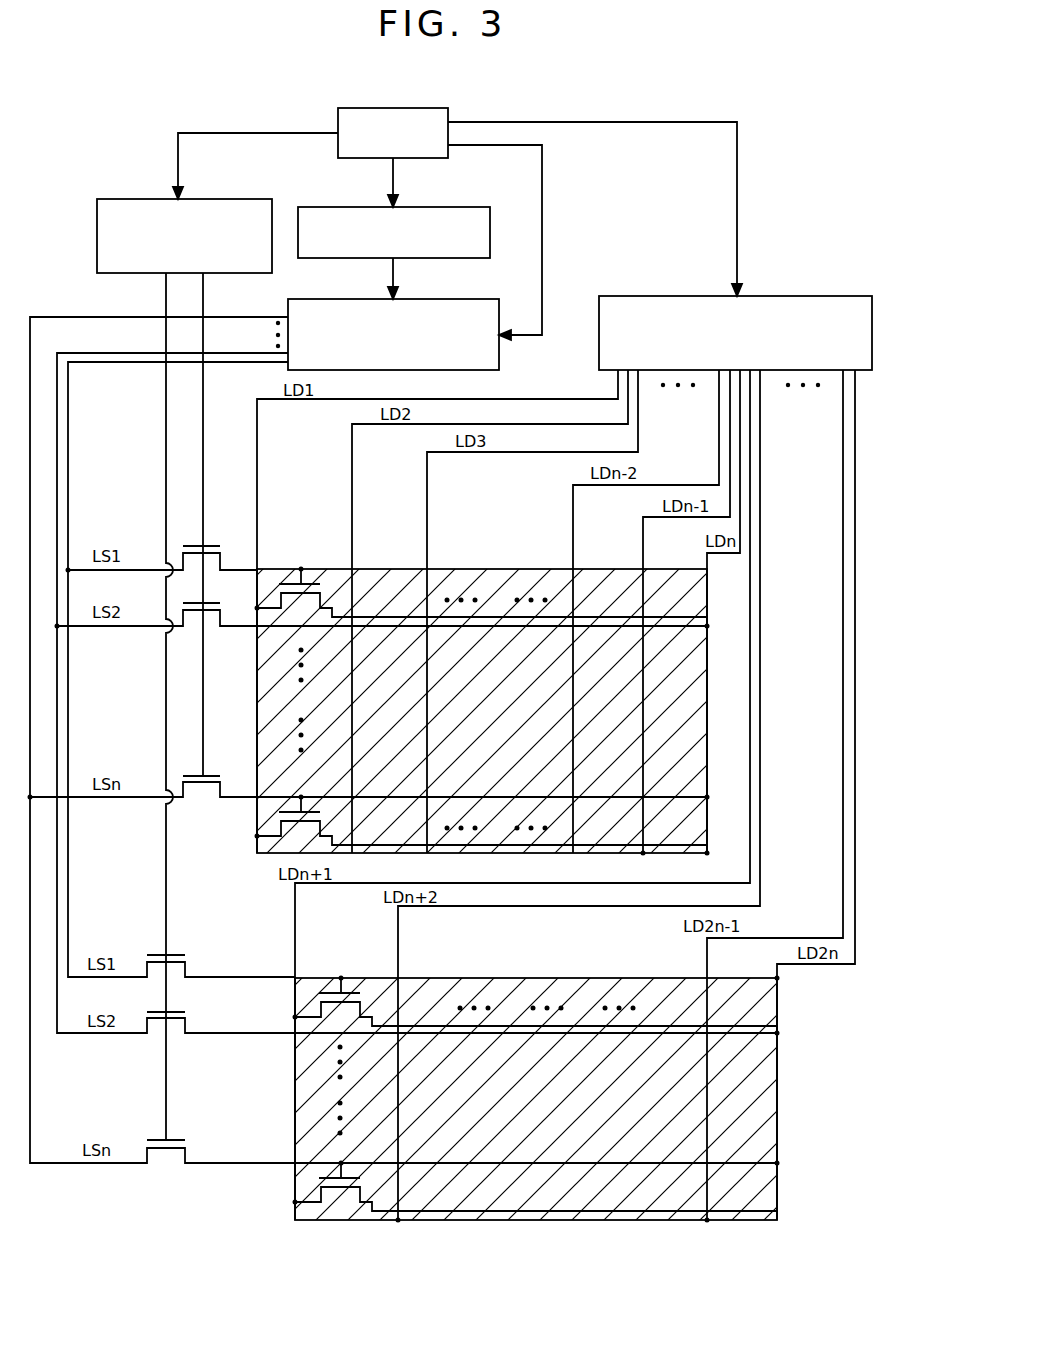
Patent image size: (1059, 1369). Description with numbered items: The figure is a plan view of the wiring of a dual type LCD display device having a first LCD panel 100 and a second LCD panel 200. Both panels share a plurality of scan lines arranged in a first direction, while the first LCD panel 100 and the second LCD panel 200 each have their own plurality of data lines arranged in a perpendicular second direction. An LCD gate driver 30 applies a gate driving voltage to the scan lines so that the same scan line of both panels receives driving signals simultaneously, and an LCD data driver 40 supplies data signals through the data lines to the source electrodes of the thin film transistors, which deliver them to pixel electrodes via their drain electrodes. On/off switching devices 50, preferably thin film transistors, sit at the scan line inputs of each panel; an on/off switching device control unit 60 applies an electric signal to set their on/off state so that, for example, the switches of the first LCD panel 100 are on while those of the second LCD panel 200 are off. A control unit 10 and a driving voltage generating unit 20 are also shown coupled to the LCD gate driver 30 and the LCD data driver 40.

The control unit 10 is at (430, 108).
The driving voltage generating unit 20 is at (470, 207).
The LCD gate driver 30 is at (482, 299).
The LCD data driver 40 is at (850, 296).
The on/off switching devices 50 is at (222, 543).
The on/off switching device control unit 60 is at (220, 199).
The first LCD panel 100 is at (508, 569).
The second LCD panel 200 is at (777, 1089).